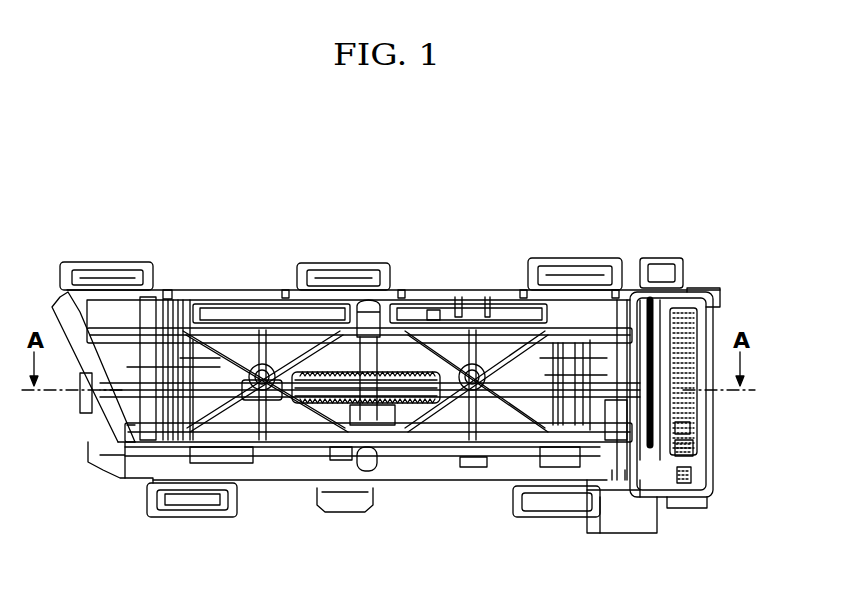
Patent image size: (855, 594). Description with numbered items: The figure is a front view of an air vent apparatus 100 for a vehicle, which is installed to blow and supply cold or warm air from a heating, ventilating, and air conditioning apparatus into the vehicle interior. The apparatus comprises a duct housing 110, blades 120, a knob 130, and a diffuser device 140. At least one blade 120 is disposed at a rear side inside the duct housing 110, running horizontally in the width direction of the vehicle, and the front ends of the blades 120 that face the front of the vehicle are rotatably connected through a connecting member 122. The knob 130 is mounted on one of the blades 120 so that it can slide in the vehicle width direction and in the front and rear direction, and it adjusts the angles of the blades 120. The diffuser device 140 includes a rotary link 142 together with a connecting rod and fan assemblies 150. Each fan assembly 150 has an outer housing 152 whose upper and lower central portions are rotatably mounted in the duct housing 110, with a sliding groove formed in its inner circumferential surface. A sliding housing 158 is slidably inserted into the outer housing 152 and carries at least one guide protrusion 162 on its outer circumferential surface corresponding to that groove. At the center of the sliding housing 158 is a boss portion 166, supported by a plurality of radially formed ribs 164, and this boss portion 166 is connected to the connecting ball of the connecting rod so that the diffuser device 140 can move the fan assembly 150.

The air vent apparatus 100 is at (418, 238).
The duct housing 110 is at (480, 290).
The blade 120 is at (590, 340).
The connecting member 122 is at (620, 412).
The knob 130 is at (408, 393).
The diffuser device 140 is at (352, 298).
The rotary link 142 is at (365, 416).
The fan assembly 150 is at (300, 480).
The outer housing 152 is at (202, 310).
The sliding housing 158 is at (290, 322).
The guide protrusion 162 is at (216, 306).
The rib 164 is at (230, 425).
The boss portion 166 is at (277, 396).